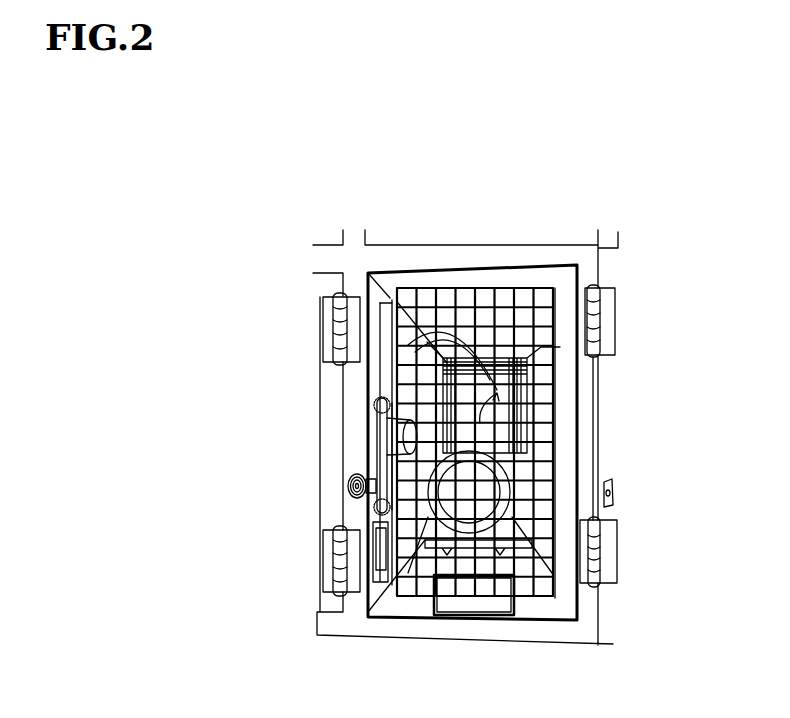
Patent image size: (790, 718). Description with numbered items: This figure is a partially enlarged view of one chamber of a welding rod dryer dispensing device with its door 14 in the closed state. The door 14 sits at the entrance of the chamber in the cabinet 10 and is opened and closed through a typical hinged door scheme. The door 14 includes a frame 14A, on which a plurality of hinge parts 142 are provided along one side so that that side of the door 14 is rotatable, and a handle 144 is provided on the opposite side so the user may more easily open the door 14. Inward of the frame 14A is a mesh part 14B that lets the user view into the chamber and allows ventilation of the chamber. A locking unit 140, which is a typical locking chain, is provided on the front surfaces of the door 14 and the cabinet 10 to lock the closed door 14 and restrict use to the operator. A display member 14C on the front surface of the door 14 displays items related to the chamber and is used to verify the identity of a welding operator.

The cabinet 10 is at (404, 252).
The door 14 is at (525, 268).
The frame 14A is at (562, 447).
The mesh part 14B is at (540, 388).
The display member 14C is at (470, 603).
The locking unit 140 is at (338, 481).
The hinge parts 142 is at (603, 304).
The handle 144 is at (383, 461).